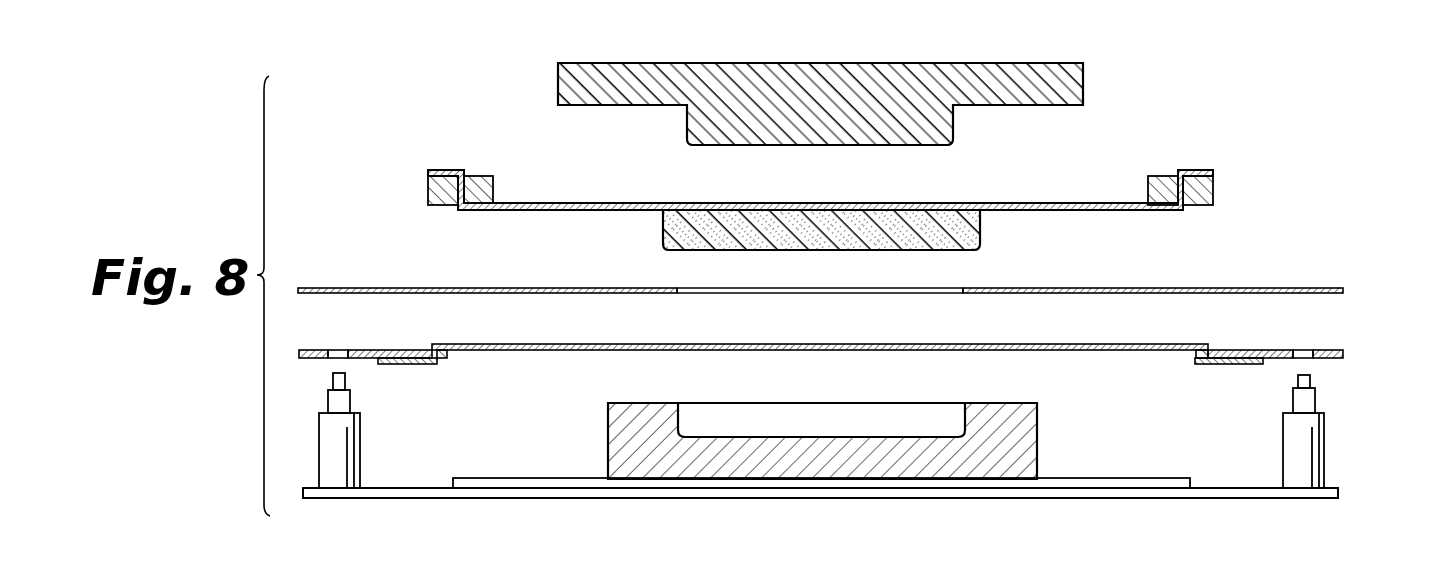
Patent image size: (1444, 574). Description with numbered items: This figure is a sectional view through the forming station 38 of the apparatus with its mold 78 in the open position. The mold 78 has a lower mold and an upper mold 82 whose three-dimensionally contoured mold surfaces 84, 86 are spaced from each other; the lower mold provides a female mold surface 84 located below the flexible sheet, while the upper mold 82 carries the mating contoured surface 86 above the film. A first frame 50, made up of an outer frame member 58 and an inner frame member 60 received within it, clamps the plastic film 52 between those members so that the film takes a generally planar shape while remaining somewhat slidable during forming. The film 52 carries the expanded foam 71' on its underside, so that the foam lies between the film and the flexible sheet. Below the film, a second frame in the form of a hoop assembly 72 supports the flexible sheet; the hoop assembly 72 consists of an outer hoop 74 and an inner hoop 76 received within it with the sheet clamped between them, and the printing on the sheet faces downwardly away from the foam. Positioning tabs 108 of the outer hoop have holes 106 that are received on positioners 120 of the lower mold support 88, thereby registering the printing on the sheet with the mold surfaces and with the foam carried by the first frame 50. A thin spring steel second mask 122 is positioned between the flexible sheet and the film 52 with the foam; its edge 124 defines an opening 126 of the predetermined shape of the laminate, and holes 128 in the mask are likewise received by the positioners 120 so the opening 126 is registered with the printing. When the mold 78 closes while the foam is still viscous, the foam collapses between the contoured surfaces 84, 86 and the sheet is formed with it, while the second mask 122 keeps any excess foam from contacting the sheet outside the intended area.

The forming station 38 is at (368, 201).
The first frame 50 is at (1234, 185).
The plastic film 52 is at (1033, 210).
The outer frame member 58 is at (1197, 195).
The inner frame member 60 is at (1162, 185).
The elastomeric block 71' is at (821, 270).
The hoop assembly 72 is at (274, 352).
The outer hoop 74 is at (396, 348).
The inner hoop 76 is at (448, 358).
The mold 78 is at (544, 84).
The upper mold 82 is at (1083, 97).
The female mold surface 84 is at (886, 424).
The mold surface 86 is at (816, 147).
The lower mold support 88 is at (1210, 492).
The holes 106 is at (340, 356).
The positioning tabs 108 is at (318, 352).
The positioners 120 is at (327, 448).
The second mask 122 is at (1097, 276).
The edge 124 is at (677, 290).
The opening 126 is at (795, 278).
The holes 128 is at (392, 288).